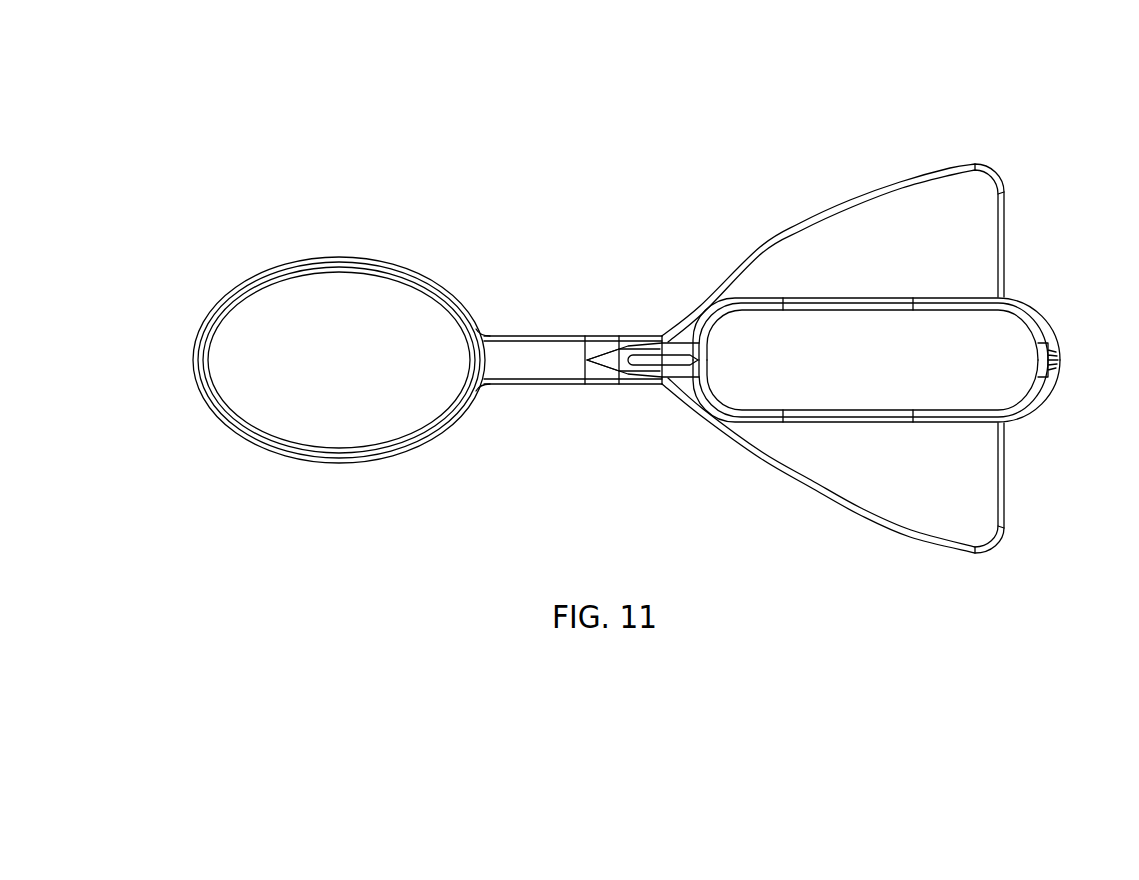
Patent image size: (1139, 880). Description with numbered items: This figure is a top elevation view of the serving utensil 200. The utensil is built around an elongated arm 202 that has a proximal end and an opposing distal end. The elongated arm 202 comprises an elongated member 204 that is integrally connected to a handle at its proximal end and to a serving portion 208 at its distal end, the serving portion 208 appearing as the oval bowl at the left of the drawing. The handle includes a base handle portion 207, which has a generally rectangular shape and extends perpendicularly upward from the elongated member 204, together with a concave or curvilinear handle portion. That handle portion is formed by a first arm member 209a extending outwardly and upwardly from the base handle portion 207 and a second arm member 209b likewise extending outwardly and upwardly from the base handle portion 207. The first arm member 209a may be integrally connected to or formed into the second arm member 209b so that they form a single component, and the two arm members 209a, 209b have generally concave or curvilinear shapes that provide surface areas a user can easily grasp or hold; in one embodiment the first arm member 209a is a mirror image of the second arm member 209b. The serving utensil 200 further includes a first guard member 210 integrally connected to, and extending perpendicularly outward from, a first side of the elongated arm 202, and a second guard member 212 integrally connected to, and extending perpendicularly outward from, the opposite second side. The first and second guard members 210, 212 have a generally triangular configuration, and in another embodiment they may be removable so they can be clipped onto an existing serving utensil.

The serving utensil 200 is at (568, 132).
The elongated arm 202 is at (535, 318).
The elongated member 204 is at (527, 366).
The base handle portion 207 is at (668, 360).
The serving portion 208 is at (319, 406).
The first arm member 209a is at (985, 307).
The second arm member 209b is at (755, 413).
The first guard member 210 is at (885, 215).
The second guard member 212 is at (887, 508).